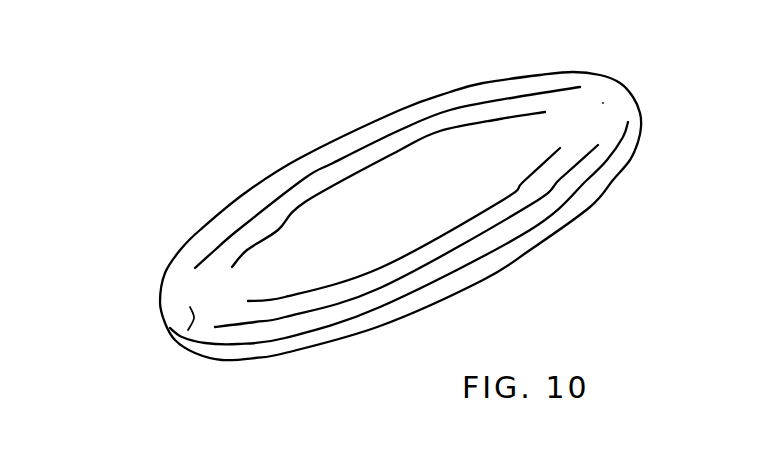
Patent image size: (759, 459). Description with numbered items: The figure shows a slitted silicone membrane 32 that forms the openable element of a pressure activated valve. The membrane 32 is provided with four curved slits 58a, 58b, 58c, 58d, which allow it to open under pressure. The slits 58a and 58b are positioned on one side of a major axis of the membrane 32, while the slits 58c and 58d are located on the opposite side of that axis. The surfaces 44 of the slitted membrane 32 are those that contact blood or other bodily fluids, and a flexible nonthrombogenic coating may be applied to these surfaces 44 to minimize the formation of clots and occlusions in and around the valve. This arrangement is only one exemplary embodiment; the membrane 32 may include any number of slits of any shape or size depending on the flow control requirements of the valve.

The membrane 32 is at (548, 229).
The surfaces of the slitted membrane 44 is at (603, 103).
The curved slit 58a is at (333, 162).
The curved slit 58b is at (440, 131).
The curved slit 58c is at (575, 160).
The curved slit 58d is at (268, 300).